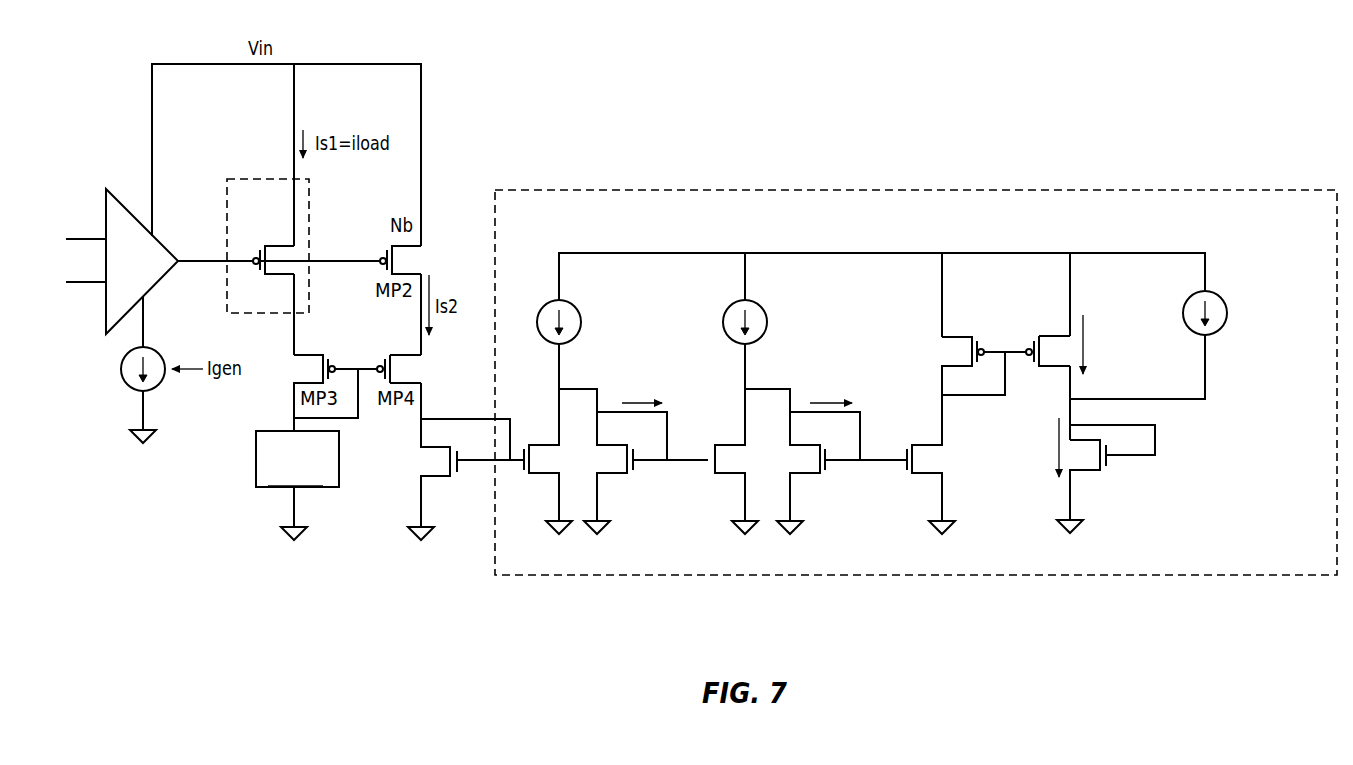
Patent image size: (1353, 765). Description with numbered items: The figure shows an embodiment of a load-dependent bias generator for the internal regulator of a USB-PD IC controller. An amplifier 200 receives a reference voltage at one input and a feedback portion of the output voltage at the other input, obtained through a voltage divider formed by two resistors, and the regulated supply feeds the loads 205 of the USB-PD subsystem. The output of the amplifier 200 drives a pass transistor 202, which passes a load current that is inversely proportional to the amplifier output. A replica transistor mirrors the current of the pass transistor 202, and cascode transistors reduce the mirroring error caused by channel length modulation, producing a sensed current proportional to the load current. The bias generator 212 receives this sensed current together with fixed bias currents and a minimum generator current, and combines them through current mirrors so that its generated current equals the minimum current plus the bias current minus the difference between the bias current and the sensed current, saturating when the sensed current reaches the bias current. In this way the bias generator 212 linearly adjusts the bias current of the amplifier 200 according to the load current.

The amplifier 200 is at (150, 270).
The pass transistor 202 is at (270, 201).
The loads 205 is at (312, 458).
The bias generator 212 is at (540, 223).